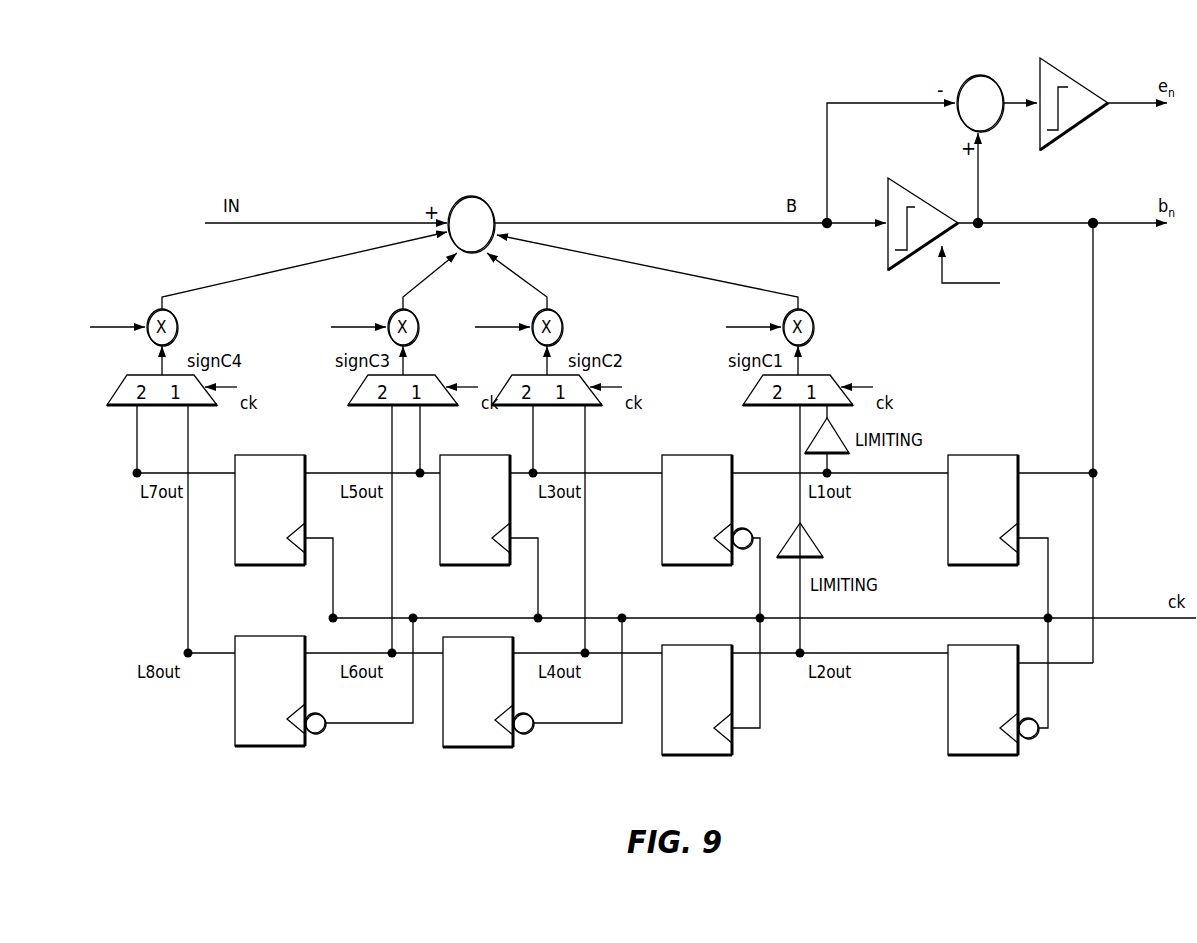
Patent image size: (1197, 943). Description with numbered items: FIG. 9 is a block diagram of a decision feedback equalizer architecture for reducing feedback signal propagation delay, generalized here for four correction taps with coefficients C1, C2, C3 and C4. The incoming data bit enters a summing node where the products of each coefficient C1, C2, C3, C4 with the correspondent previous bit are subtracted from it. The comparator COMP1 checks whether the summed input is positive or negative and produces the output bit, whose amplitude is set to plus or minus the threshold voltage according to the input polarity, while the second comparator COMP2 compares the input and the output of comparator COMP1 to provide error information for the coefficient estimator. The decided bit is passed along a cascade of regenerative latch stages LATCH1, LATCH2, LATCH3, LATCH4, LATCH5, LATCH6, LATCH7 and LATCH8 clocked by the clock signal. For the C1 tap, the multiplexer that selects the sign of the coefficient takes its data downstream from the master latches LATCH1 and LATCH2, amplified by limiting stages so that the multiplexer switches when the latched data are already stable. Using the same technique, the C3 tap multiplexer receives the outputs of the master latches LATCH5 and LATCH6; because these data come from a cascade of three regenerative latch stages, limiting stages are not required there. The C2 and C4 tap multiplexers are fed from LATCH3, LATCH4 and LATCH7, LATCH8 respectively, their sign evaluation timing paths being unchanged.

The comparator COMP1 is at (944, 211).
The second comparator COMP2 is at (1091, 92).
The master latch LATCH1 is at (998, 536).
The master latch LATCH2 is at (998, 700).
The latch LATCH3 is at (711, 536).
The latch LATCH4 is at (711, 700).
The master latch LATCH5 is at (489, 536).
The master latch LATCH6 is at (532, 700).
The latch LATCH7 is at (284, 536).
The latch LATCH8 is at (324, 700).
The C1 tap C1 is at (655, 305).
The C2 tap C2 is at (519, 314).
The C3 tap C3 is at (394, 314).
The C4 tap C4 is at (268, 303).